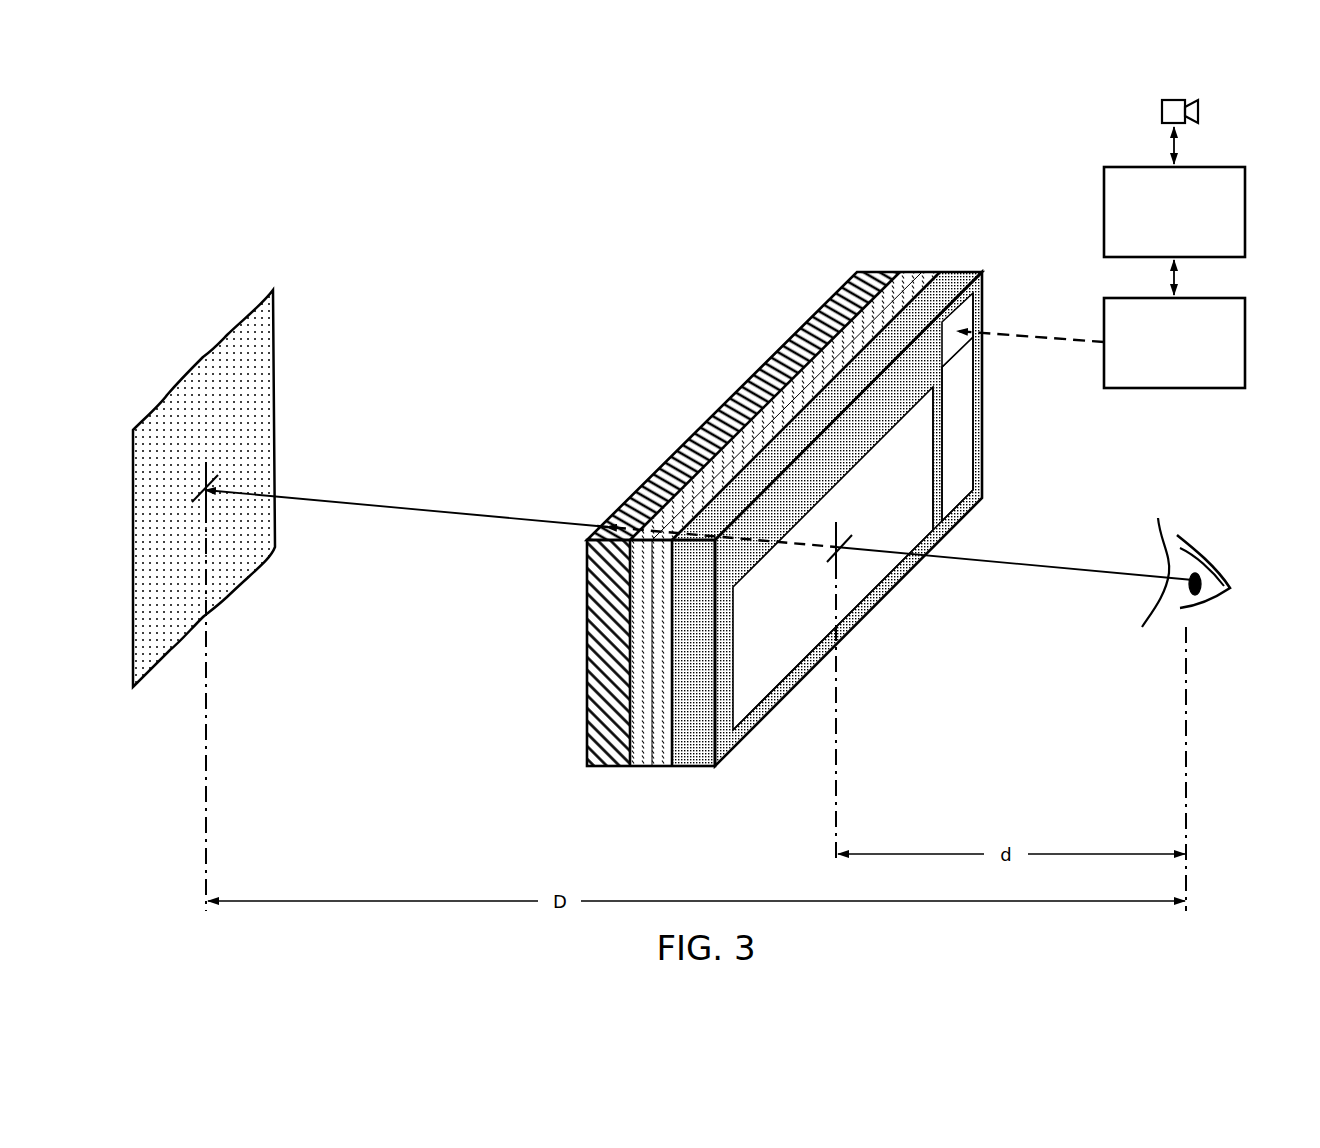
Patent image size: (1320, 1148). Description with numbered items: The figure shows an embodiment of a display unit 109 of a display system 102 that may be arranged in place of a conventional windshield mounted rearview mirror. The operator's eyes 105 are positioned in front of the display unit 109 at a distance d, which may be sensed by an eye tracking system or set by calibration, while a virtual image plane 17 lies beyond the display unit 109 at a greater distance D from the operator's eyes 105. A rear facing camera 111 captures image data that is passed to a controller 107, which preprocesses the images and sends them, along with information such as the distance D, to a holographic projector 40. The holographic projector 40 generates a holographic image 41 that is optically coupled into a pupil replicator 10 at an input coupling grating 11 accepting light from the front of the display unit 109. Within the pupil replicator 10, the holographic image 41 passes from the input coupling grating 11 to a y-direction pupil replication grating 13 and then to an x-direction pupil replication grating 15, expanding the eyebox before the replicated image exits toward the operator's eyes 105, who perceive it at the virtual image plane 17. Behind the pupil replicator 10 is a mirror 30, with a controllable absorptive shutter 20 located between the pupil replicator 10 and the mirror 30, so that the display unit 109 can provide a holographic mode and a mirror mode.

The display system 102 is at (977, 130).
The virtual image plane 17 is at (297, 385).
The mirror 30 is at (857, 261).
The controllable absorptive shutter 20 is at (898, 261).
The pupil replicator 10 is at (982, 261).
The input coupling grating 11 is at (962, 312).
The y-direction pupil replication grating 13 is at (958, 447).
The x-direction pupil replication grating 15 is at (863, 577).
The holographic image 41 is at (1012, 331).
The holographic projector 40 is at (1162, 355).
The controller 107 is at (1156, 224).
The rear facing camera 111 is at (1172, 98).
The display unit 109 is at (1087, 475).
The operator's eyes 105 is at (1150, 652).